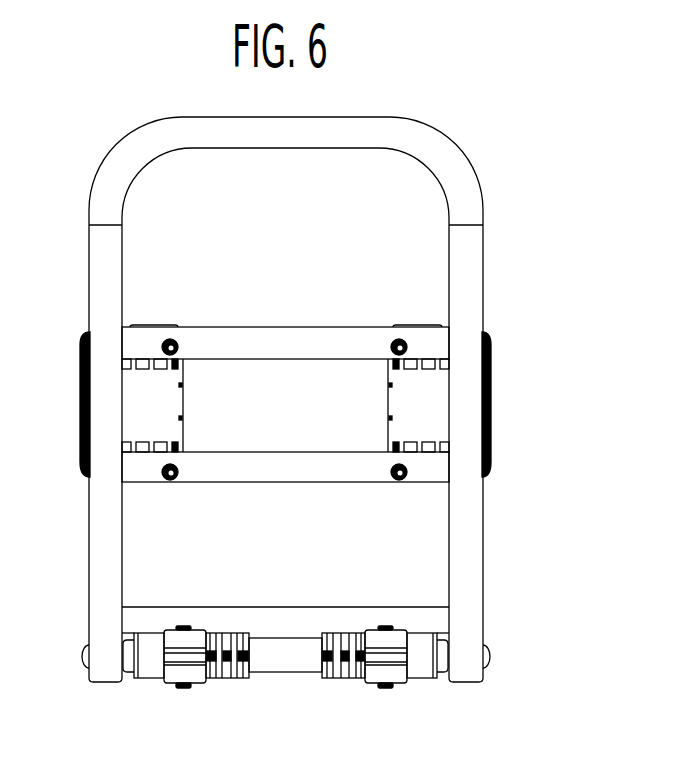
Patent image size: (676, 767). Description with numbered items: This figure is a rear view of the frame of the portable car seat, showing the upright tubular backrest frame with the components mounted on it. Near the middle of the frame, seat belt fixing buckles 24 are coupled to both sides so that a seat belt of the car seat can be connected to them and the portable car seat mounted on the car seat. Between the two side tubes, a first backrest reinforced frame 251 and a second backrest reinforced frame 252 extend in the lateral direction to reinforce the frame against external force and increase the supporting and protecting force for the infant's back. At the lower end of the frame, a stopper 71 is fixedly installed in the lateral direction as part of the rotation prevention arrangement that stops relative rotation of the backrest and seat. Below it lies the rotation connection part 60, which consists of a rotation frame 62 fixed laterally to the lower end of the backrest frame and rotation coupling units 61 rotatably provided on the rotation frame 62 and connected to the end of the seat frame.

The seat belt fixing buckle 24 is at (138, 414).
The first backrest reinforced frame 251 is at (370, 328).
The second backrest reinforced frame 252 is at (352, 473).
The stopper 71 is at (433, 618).
The rotation connection part 60 is at (285, 696).
The rotation coupling unit 61 is at (170, 673).
The rotation frame 62 is at (285, 685).